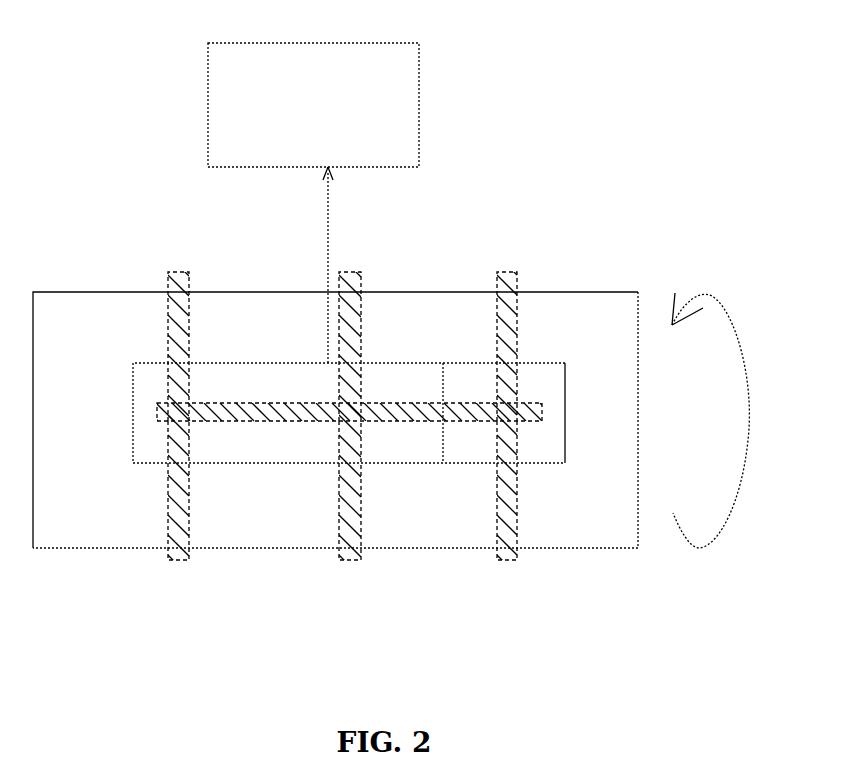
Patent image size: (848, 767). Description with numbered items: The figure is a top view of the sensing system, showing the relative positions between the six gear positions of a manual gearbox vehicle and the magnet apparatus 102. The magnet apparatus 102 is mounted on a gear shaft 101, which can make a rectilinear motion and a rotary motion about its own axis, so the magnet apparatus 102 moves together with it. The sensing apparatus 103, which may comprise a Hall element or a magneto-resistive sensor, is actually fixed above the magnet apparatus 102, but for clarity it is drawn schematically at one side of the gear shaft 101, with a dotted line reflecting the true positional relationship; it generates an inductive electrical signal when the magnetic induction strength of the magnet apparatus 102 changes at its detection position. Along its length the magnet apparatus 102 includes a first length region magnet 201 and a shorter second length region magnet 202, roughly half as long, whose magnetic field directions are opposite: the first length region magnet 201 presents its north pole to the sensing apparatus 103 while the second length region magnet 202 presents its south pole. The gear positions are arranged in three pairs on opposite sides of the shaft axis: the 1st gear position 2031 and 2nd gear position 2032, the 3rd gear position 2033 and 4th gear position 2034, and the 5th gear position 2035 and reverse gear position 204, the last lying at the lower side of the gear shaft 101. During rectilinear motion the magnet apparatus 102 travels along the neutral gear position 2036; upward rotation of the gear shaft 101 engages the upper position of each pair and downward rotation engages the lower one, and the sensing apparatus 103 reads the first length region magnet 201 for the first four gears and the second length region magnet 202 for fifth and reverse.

The gear shaft 101 is at (585, 328).
The magnet apparatus 102 is at (423, 363).
The sensing apparatus 103 is at (405, 82).
The first length region magnet 201 is at (258, 393).
The second length region magnet 202 is at (473, 450).
The 1st gear position 2031 is at (170, 292).
The 2nd gear position 2032 is at (188, 545).
The 3rd gear position 2033 is at (350, 280).
The 4th gear position 2034 is at (360, 543).
The 5th gear position 2035 is at (515, 272).
The neutral gear position 2036 is at (248, 412).
The reverse gear position 204 is at (513, 557).